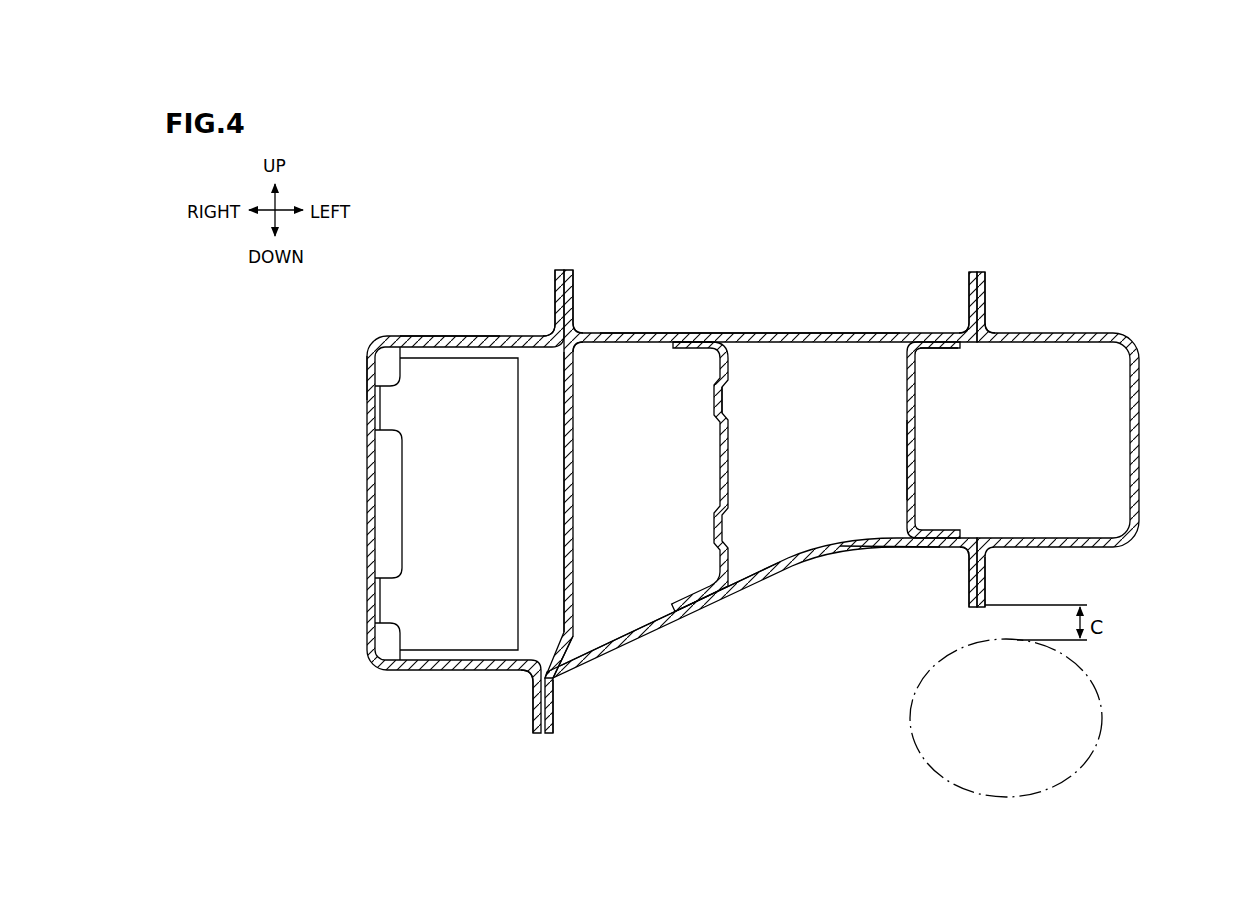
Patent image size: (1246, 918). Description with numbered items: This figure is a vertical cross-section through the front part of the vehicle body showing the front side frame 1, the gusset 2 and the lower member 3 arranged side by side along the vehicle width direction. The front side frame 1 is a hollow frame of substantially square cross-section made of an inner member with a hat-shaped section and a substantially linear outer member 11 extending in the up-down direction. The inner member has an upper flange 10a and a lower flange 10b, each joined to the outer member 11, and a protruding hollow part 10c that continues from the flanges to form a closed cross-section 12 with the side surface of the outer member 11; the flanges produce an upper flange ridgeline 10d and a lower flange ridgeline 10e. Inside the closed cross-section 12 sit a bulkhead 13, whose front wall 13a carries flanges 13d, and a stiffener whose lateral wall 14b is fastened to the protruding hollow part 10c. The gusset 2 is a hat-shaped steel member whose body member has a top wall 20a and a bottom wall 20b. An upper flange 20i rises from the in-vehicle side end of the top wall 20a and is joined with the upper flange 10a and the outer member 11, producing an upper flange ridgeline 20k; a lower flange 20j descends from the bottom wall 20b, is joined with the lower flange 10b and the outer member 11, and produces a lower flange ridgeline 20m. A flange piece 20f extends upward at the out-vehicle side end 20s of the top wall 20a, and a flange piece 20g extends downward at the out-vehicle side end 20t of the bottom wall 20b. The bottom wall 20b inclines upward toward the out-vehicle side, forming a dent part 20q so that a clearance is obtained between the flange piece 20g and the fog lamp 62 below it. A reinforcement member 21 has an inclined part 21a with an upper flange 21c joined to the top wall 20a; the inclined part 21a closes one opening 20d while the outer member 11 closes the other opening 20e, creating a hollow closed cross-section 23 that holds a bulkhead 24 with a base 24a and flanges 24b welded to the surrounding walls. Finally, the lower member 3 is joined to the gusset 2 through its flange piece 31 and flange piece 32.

The front side frame 1 is at (360, 460).
The gusset 2 is at (795, 330).
The lower member 3 is at (1144, 424).
The upper flange 10a is at (553, 292).
The lower flange 10b is at (534, 726).
The protruding hollow part 10c is at (365, 378).
The upper flange ridgeline 10d is at (552, 332).
The lower flange ridgeline 10e is at (525, 671).
The outer member 11 is at (575, 455).
The closed cross-section 12 is at (468, 498).
The bulkhead 13 is at (397, 503).
The front wall 13a is at (398, 533).
The flanges 13d is at (462, 362).
The lateral wall 14b is at (442, 334).
The top wall 20a is at (701, 333).
The bottom wall 20b is at (698, 616).
The opening 20d is at (986, 337).
The opening 20e is at (578, 344).
The flange piece 20f is at (967, 297).
The flange piece 20g is at (969, 588).
The upper flange 20i is at (578, 291).
The lower flange 20j is at (554, 726).
The upper flange ridgeline 20k is at (581, 331).
The lower flange ridgeline 20m is at (557, 686).
The dent part 20q is at (896, 546).
The out-vehicle side end 20s is at (966, 326).
The out-vehicle side end 20t is at (966, 551).
The reinforcement member 21 is at (903, 397).
The inclined part 21a is at (916, 460).
The upper flange 21c is at (936, 349).
The closed cross-section 23 is at (860, 454).
The bulkhead 24 is at (733, 480).
The base 24a is at (730, 409).
The flanges 24b is at (686, 349).
The flange piece 31 is at (986, 297).
The flange piece 32 is at (986, 569).
The fog lamp 62 is at (1098, 692).